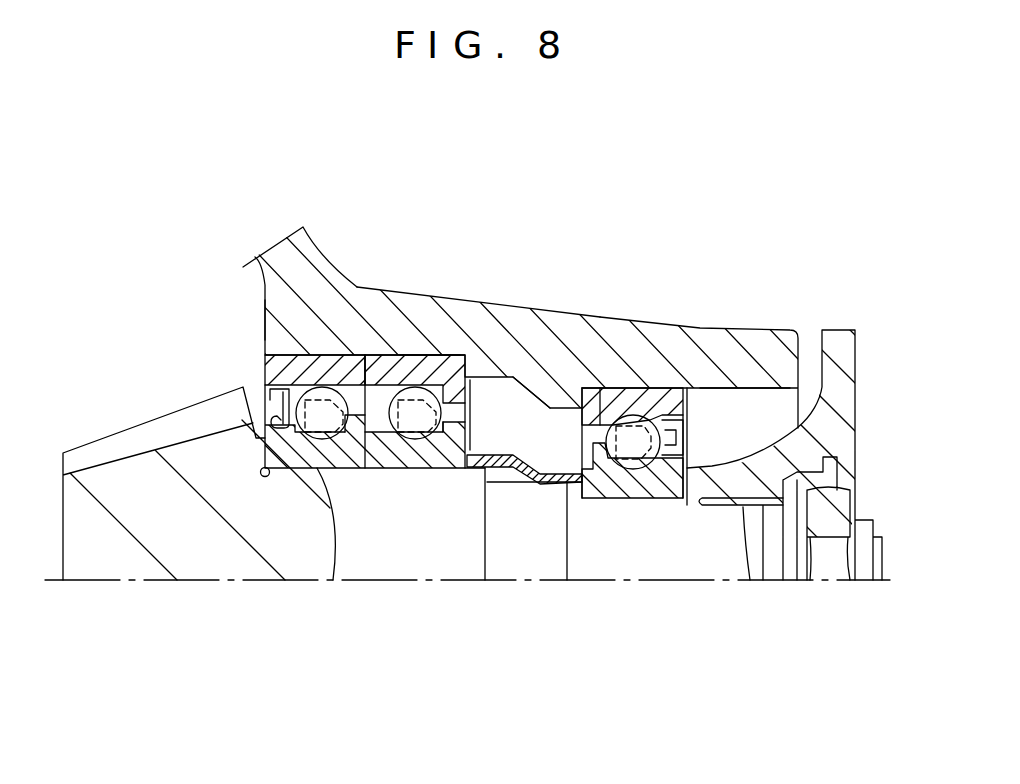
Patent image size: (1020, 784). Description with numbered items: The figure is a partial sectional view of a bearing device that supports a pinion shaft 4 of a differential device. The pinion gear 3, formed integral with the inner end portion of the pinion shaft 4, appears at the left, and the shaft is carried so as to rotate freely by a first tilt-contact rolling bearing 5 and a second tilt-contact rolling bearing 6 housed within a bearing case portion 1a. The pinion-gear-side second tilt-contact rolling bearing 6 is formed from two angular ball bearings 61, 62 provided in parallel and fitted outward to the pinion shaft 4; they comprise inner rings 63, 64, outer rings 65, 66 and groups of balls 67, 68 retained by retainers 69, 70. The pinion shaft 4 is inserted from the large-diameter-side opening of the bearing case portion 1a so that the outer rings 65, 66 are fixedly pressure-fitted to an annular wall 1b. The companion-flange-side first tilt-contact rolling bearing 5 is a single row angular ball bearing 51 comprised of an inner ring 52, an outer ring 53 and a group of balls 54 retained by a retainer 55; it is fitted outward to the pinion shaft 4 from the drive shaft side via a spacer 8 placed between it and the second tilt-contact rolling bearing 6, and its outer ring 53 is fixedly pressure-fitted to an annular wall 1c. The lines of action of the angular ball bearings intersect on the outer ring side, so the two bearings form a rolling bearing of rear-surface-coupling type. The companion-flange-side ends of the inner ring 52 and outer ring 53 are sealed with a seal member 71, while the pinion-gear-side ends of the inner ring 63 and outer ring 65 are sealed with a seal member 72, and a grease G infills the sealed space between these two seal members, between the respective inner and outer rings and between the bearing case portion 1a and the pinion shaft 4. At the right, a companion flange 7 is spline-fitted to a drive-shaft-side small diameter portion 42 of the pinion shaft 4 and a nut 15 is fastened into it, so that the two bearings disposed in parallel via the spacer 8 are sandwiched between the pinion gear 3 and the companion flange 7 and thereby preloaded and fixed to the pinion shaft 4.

The bearing case portion 1a is at (327, 262).
The annular wall 1b is at (393, 353).
The annular wall 1c is at (667, 327).
The pinion gear 3 is at (140, 433).
The pinion shaft 4 is at (540, 560).
The first tilt-contact rolling bearing 5 is at (685, 588).
The second tilt-contact rolling bearing 6 is at (283, 588).
The companion flange 7 is at (832, 335).
The spacer 8 is at (540, 482).
The nut 15 is at (840, 507).
The drive-shaft-side small diameter portion 42 is at (740, 513).
The single row angular ball bearing 51 is at (707, 350).
The inner ring 52 is at (657, 493).
The outer ring 53 is at (616, 398).
The balls 54 is at (635, 414).
The retainer 55 is at (597, 397).
The angular ball bearing 61 is at (267, 347).
The angular ball bearing 62 is at (476, 353).
The inner ring 63 is at (298, 458).
The inner ring 64 is at (480, 455).
The outer ring 65 is at (267, 320).
The outer ring 66 is at (420, 363).
The balls 67 is at (298, 437).
The balls 68 is at (447, 457).
The retainer 69 is at (355, 398).
The retainer 70 is at (505, 400).
The seal member 71 is at (689, 434).
The seal member 72 is at (265, 398).
The grease G is at (515, 408).